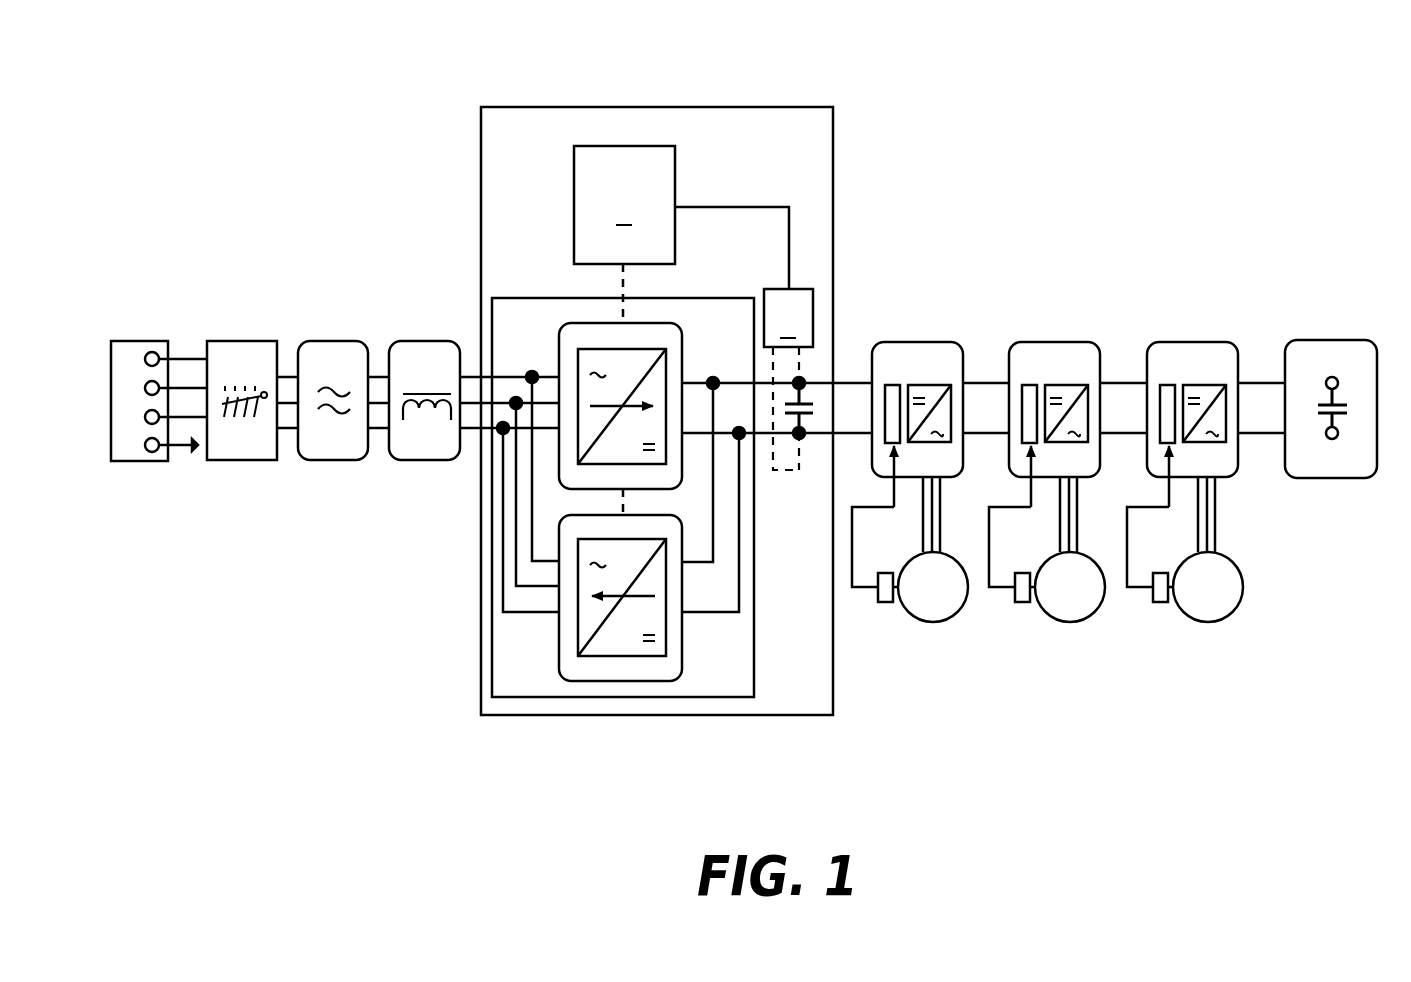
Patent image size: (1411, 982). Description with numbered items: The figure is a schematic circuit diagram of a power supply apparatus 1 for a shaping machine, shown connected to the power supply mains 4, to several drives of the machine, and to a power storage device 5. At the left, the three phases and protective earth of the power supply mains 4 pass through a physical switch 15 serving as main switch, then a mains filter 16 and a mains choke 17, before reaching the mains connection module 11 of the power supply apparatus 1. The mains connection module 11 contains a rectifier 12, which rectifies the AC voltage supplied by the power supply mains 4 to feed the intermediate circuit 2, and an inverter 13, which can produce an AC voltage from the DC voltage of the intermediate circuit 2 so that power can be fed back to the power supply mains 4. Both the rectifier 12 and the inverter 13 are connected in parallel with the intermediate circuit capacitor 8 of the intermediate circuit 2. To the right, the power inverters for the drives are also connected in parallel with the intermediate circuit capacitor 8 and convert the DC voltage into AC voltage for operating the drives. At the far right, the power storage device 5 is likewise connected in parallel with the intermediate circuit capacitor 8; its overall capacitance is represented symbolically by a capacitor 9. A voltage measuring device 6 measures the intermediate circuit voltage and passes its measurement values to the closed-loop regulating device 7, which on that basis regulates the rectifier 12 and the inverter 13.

The power supply apparatus 1 is at (538, 122).
The intermediate circuit 2 is at (829, 378).
The power supply mains 4 is at (141, 335).
The power storage device 5 is at (1337, 460).
The voltage measuring device 6 is at (788, 379).
The closed-loop regulating device 7 is at (681, 330).
The intermediate circuit capacitor 8 is at (813, 400).
The capacitor 9 is at (1344, 399).
The mains connection module 11 is at (520, 673).
The rectifier 12 is at (576, 337).
The inverter 13 is at (618, 668).
The physical switch 15 is at (243, 463).
The mains filter 16 is at (332, 463).
The mains choke 17 is at (427, 463).